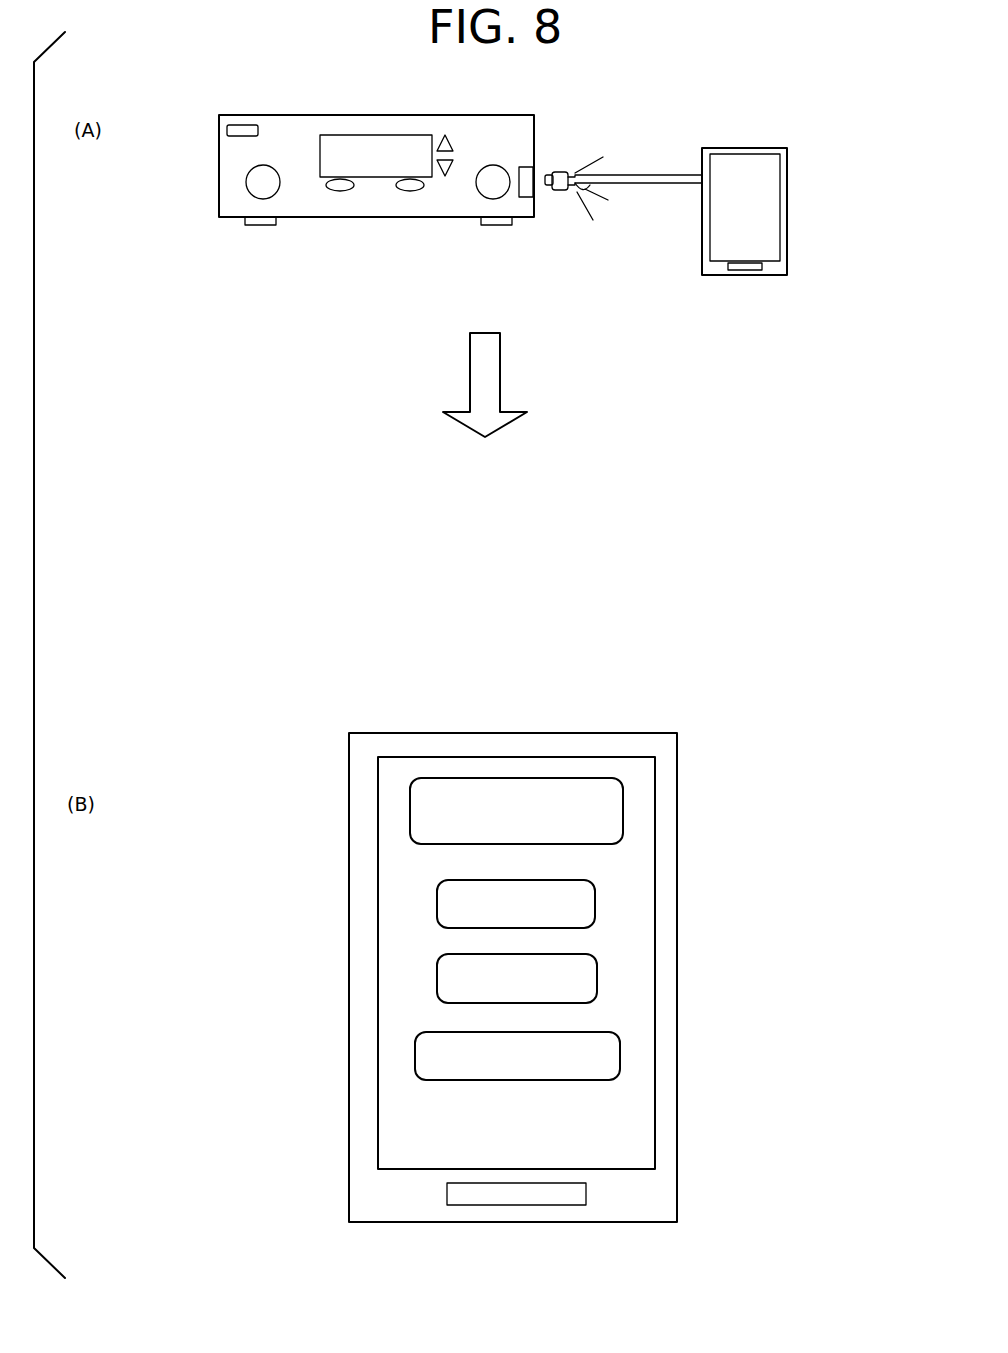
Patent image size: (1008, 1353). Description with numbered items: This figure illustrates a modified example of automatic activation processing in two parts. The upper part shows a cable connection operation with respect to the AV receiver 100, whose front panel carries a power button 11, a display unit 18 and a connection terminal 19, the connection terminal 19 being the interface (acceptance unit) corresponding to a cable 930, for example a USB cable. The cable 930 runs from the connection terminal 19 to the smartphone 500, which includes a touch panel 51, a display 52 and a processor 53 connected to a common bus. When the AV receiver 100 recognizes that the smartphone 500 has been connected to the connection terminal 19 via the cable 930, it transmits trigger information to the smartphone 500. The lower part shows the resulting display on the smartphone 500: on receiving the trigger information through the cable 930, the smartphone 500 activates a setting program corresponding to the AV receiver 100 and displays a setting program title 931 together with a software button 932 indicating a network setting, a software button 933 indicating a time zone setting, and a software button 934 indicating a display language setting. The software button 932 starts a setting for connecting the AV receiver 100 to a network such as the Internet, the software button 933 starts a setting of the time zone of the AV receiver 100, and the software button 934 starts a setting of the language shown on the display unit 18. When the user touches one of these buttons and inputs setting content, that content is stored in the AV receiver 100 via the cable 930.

The power button 11 is at (250, 125).
The display unit 18 is at (403, 135).
The connection terminal 19 is at (512, 172).
The AV receiver 100 is at (414, 147).
The cable 930 is at (652, 178).
The smartphone 500 is at (618, 654).
The processor 53 is at (762, 206).
The touch panel 51 is at (567, 943).
The display 52 is at (640, 800).
The setting program title 931 is at (608, 822).
The software button indicating a network setting 932 is at (587, 913).
The software button indicating a time zone setting 933 is at (587, 985).
The software button indicating a display language setting 934 is at (618, 1060).